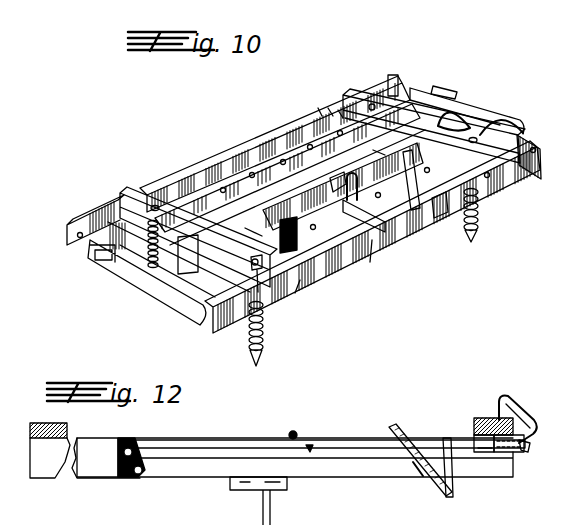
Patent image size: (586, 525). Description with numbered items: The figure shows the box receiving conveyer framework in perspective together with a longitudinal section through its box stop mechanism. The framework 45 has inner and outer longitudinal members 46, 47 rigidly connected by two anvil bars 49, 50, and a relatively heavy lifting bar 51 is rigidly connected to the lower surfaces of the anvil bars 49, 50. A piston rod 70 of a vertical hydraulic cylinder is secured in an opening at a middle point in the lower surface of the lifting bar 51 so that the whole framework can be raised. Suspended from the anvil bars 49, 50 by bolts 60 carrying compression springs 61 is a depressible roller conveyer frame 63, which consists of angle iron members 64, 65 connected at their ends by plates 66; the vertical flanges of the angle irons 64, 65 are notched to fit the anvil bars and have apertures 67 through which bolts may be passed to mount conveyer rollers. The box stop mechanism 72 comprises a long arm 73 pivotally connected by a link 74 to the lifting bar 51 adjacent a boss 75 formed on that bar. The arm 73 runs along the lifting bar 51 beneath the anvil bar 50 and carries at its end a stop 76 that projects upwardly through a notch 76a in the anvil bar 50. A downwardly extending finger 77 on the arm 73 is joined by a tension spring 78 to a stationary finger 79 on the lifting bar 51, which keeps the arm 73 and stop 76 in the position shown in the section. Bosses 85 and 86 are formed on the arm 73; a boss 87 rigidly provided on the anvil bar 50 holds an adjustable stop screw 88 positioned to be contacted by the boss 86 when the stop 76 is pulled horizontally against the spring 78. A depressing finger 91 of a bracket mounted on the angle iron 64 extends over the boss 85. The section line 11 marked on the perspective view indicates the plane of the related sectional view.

In FIG. 10, the section line 11 is at (230, 125).
In FIG. 10, the framework 45 is at (370, 262).
In FIG. 10, the inner longitudinal member 46 is at (295, 293).
In FIG. 10, the outer longitudinal member 47 is at (102, 210).
In FIG. 10, the anvil bar 49 is at (136, 196).
In FIG. 12, the anvil bar 49 is at (68, 433).
In FIG. 10, the anvil bar 50 is at (372, 95).
In FIG. 12, the anvil bar 50 is at (480, 418).
In FIG. 10, the lifting bar 51 is at (297, 190).
In FIG. 12, the lifting bar 51 is at (190, 465).
In FIG. 10, the bolt 60 is at (262, 300).
In FIG. 10, the compression spring 61 is at (480, 210).
In FIG. 10, the depressible roller conveyer frame 63 is at (124, 282).
In FIG. 10, the angle iron member 64 is at (440, 257).
In FIG. 10, the angle iron member 65 is at (190, 182).
In FIG. 10, the plate 66 is at (470, 112).
In FIG. 10, the aperture 67 is at (338, 110).
In FIG. 12, the piston rod 70 is at (270, 512).
In FIG. 10, the box stop mechanism 72 is at (443, 90).
In FIG. 10, the long arm 73 is at (292, 215).
In FIG. 12, the long arm 73 is at (222, 448).
In FIG. 12, the link 74 is at (125, 478).
In FIG. 10, the boss 75 is at (246, 223).
In FIG. 12, the boss 75 is at (100, 465).
In FIG. 10, the stop 76 is at (448, 102).
In FIG. 12, the stop 76 is at (511, 402).
In FIG. 10, the notch 76a is at (493, 120).
In FIG. 12, the finger 77 is at (454, 476).
In FIG. 12, the tension spring 78 is at (416, 472).
In FIG. 10, the stationary finger 79 is at (407, 153).
In FIG. 12, the stationary finger 79 is at (393, 428).
In FIG. 10, the boss 85 is at (332, 180).
In FIG. 12, the boss 85 is at (309, 452).
In FIG. 10, the boss 86 is at (446, 218).
In FIG. 12, the boss 86 is at (471, 450).
In FIG. 12, the boss 87 is at (528, 446).
In FIG. 12, the stop screw 88 is at (533, 442).
In FIG. 10, the depressing finger 91 is at (352, 176).
In FIG. 12, the depressing finger 91 is at (297, 432).